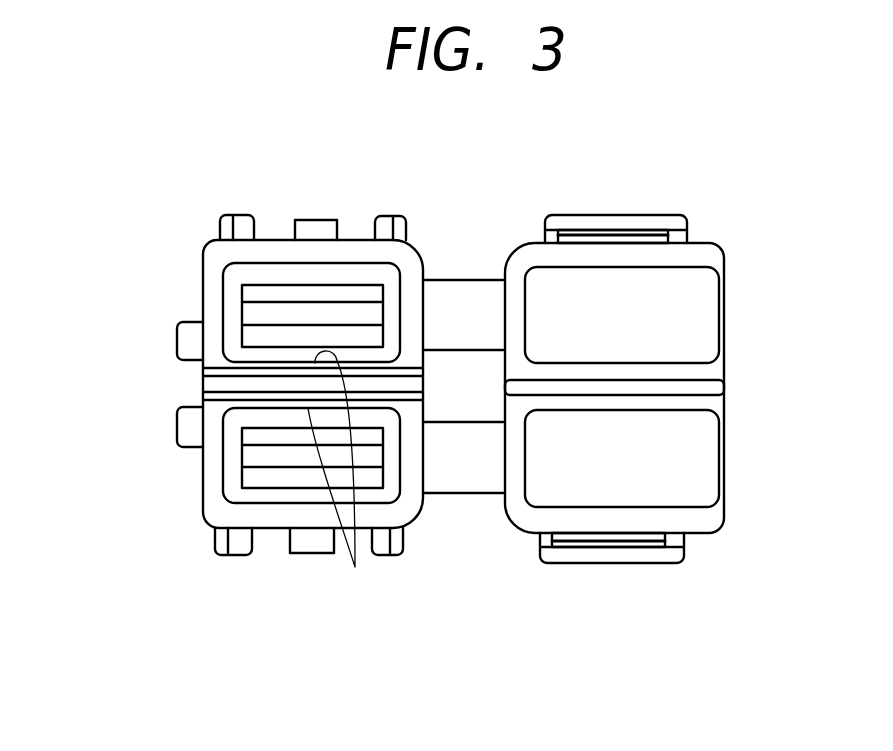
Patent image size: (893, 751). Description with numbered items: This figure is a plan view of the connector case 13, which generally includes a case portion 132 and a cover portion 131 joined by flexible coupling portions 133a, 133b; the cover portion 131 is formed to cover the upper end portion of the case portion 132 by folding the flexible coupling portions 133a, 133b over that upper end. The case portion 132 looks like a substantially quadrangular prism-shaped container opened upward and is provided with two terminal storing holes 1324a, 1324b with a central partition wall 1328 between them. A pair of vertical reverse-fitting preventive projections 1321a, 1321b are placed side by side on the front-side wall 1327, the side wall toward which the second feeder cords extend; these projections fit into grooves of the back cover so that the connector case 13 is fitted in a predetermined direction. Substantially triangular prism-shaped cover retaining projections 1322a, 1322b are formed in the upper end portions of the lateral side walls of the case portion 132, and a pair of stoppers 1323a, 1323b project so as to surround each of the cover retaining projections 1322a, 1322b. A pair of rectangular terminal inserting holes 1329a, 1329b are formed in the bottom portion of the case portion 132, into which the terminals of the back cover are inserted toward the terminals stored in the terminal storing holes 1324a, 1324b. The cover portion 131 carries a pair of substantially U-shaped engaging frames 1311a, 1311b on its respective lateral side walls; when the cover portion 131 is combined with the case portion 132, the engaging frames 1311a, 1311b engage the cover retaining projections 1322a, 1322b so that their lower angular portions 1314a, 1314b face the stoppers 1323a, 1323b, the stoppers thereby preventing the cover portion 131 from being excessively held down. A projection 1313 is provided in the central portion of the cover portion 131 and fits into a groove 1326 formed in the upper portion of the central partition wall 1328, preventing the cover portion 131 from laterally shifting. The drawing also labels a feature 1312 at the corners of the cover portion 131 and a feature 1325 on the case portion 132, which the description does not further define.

The connector case 13 is at (570, 183).
The cover portion 131 is at (748, 463).
The case portion 132 is at (188, 278).
The flexible coupling portion 133a is at (460, 298).
The flexible coupling portion 133b is at (458, 475).
The engaging frame 1311a is at (637, 225).
The engaging frame 1311b is at (620, 555).
The housing corner portion 1312 is at (705, 250).
The projection 1313 is at (717, 388).
The lower angular portion 1314a is at (688, 222).
The lower angular portion 1314b is at (680, 560).
The reverse-fitting preventive projection 1321a is at (185, 343).
The reverse-fitting preventive projection 1321b is at (187, 432).
The cover retaining projection 1322a is at (310, 228).
The cover retaining projection 1322b is at (307, 545).
The stopper 1323a is at (388, 222).
The stopper 1323b is at (240, 225).
The terminal storing hole 1324a is at (271, 290).
The terminal storing hole 1324b is at (281, 478).
The housing shoulder 1325 is at (355, 252).
The groove 1326 is at (213, 383).
The front-side wall 1327 is at (203, 312).
The central partition wall 1328 is at (355, 567).
The terminal inserting hole 1329a is at (250, 312).
The terminal inserting hole 1329b is at (243, 458).